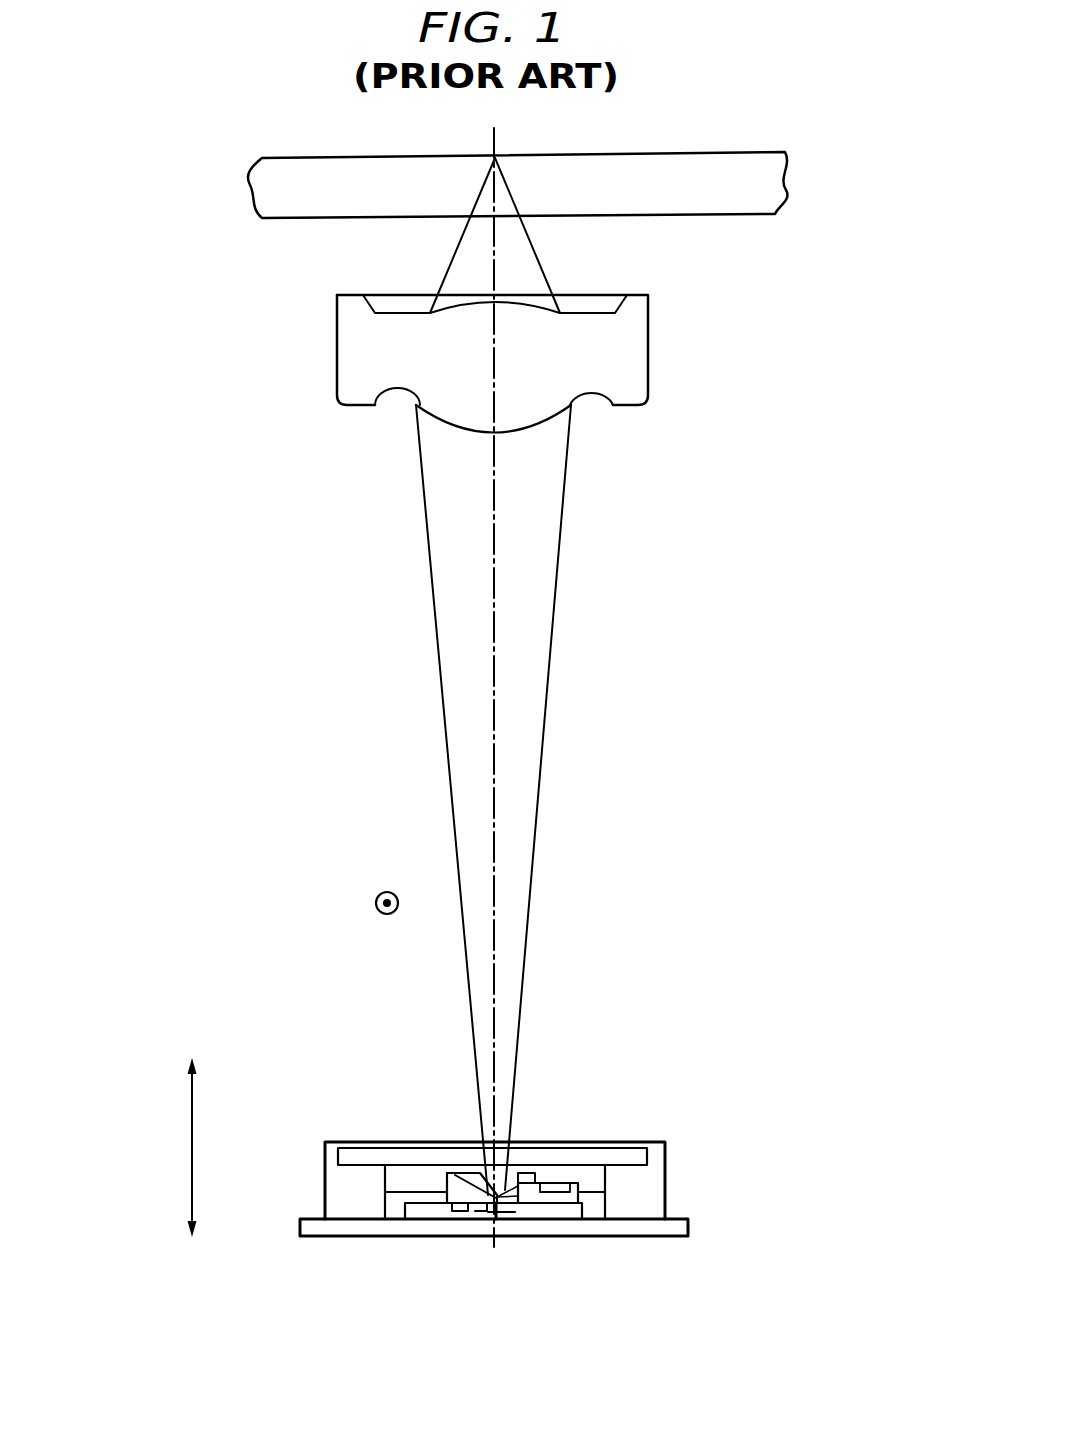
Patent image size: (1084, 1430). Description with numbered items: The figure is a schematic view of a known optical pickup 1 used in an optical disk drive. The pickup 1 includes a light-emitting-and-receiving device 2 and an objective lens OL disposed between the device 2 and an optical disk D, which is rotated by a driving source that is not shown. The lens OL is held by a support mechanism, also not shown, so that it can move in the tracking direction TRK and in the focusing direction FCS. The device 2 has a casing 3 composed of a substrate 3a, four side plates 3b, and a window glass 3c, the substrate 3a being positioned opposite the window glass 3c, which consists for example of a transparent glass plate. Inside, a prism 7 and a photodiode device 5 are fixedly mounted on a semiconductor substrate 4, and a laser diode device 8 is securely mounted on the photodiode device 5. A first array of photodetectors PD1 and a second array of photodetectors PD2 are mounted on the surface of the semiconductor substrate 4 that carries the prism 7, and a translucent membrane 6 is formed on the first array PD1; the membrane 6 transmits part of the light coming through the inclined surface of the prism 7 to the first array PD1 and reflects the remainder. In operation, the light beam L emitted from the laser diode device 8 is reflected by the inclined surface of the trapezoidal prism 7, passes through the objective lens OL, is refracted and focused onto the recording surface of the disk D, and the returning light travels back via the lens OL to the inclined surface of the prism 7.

The optical disk D is at (745, 148).
The objective lens OL is at (632, 353).
The optical pickup 1 is at (722, 563).
The light beam L is at (494, 693).
The tracking direction TRK is at (385, 892).
The focusing direction FCS is at (188, 1128).
The light-emitting-and-receiving device 2 is at (569, 1165).
The casing 3 is at (546, 1197).
The substrate 3a is at (633, 1222).
The side plates 3b is at (332, 1187).
The window glass 3c is at (612, 1152).
The semiconductor substrate 4 is at (425, 1208).
The photodiode device 5 is at (557, 1190).
The translucent membrane 6 is at (467, 1184).
The prism 7 is at (462, 1170).
The laser diode device 8 is at (540, 1182).
The first array of photodetectors PD1 is at (497, 1237).
The second array of photodetectors PD2 is at (460, 1212).